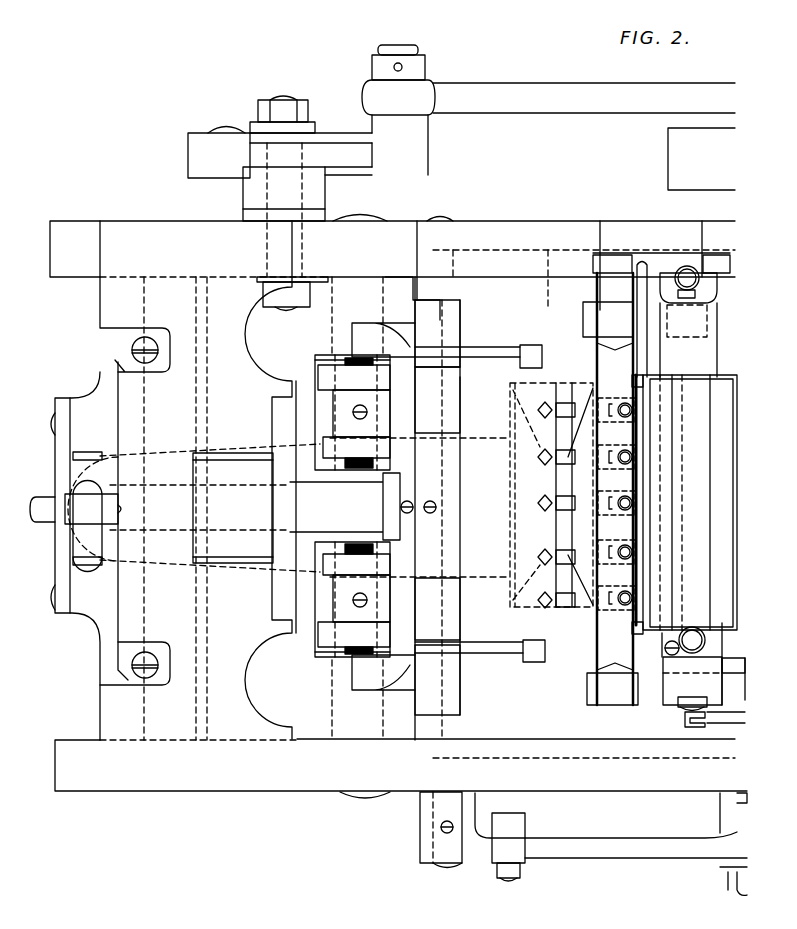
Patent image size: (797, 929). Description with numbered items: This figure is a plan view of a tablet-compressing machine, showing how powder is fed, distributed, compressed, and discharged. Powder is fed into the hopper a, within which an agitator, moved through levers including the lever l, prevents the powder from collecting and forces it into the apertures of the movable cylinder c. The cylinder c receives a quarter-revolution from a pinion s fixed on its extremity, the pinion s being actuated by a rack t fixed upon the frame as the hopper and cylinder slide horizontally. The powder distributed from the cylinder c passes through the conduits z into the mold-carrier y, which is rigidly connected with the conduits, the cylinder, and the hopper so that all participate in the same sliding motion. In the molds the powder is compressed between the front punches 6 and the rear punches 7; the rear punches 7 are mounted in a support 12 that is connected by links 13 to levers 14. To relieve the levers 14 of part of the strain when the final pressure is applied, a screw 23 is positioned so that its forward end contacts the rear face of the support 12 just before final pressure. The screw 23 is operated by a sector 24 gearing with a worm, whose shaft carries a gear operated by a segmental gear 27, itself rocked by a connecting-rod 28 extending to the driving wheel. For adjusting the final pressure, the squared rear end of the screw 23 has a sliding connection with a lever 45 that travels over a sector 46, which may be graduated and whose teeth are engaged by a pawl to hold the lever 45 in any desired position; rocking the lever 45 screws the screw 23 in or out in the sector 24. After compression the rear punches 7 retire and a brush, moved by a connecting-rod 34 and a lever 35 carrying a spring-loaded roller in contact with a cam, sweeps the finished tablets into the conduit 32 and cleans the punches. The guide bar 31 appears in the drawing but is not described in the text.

The segmental gear 27 is at (205, 157).
The connecting-rod 28 is at (625, 102).
The sector 46 is at (108, 645).
The lever 45 is at (82, 489).
The sector 24 is at (233, 508).
The screw 23 is at (345, 506).
The lever 14 is at (360, 447).
The guide bar 31 is at (500, 357).
The link 13 is at (430, 413).
The support 12 is at (481, 507).
The conduit 32 is at (583, 483).
The rear punch 7 is at (567, 410).
The mold-carrier y is at (613, 489).
The rack t is at (615, 265).
The pinion s is at (690, 263).
The conduit z is at (632, 410).
The front punch 6 is at (663, 462).
The movable cylinder c is at (683, 502).
The hopper a is at (686, 502).
The lever l is at (725, 720).
The connecting-rod 34 is at (510, 825).
The lever 35 is at (647, 850).